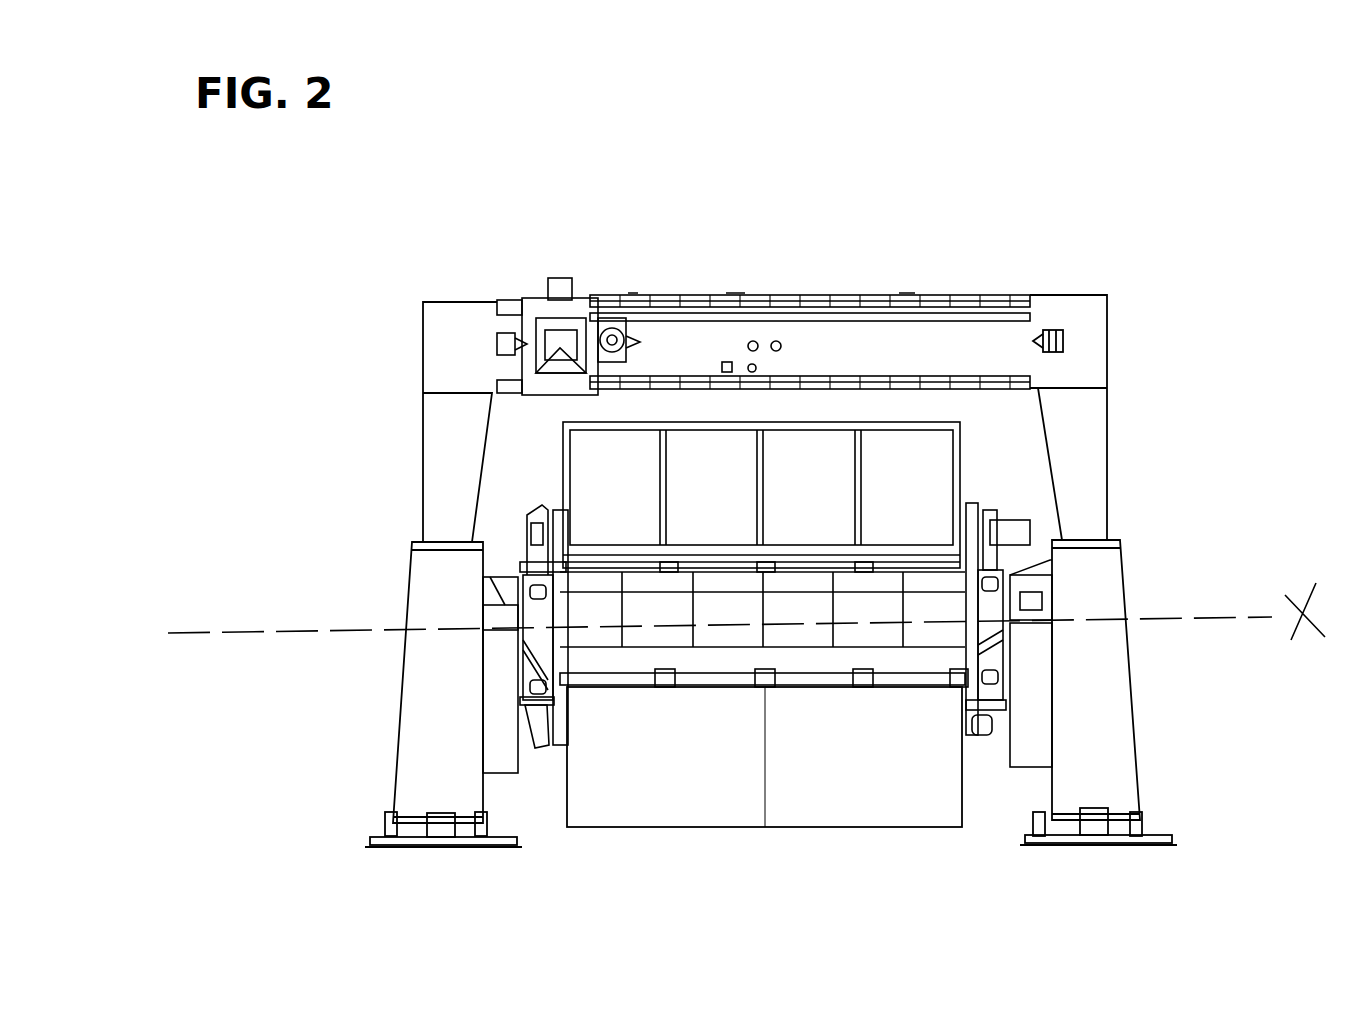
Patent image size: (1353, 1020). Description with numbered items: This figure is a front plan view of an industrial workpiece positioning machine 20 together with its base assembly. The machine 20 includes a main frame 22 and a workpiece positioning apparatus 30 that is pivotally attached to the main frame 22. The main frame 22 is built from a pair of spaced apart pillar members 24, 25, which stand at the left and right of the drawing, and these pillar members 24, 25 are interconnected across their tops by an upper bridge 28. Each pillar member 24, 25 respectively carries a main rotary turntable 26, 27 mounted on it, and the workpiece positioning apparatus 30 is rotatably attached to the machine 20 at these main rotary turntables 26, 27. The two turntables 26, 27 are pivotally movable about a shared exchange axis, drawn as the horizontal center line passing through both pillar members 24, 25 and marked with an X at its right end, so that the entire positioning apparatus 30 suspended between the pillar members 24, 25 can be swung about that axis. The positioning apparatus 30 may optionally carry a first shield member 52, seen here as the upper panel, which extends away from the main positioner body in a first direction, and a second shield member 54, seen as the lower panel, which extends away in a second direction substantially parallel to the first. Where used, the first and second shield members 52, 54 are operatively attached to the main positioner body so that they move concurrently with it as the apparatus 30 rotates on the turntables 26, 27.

The industrial workpiece positioning machine 20 is at (1073, 210).
The main frame 22 is at (1160, 583).
The pillar member 24 is at (455, 738).
The pillar member 25 is at (1110, 725).
The main rotary turntable 26 is at (490, 612).
The main rotary turntable 27 is at (1040, 607).
The upper bridge 28 is at (672, 292).
The workpiece positioning apparatus 30 is at (911, 559).
The first shield member 52 is at (740, 497).
The second shield member 54 is at (845, 790).